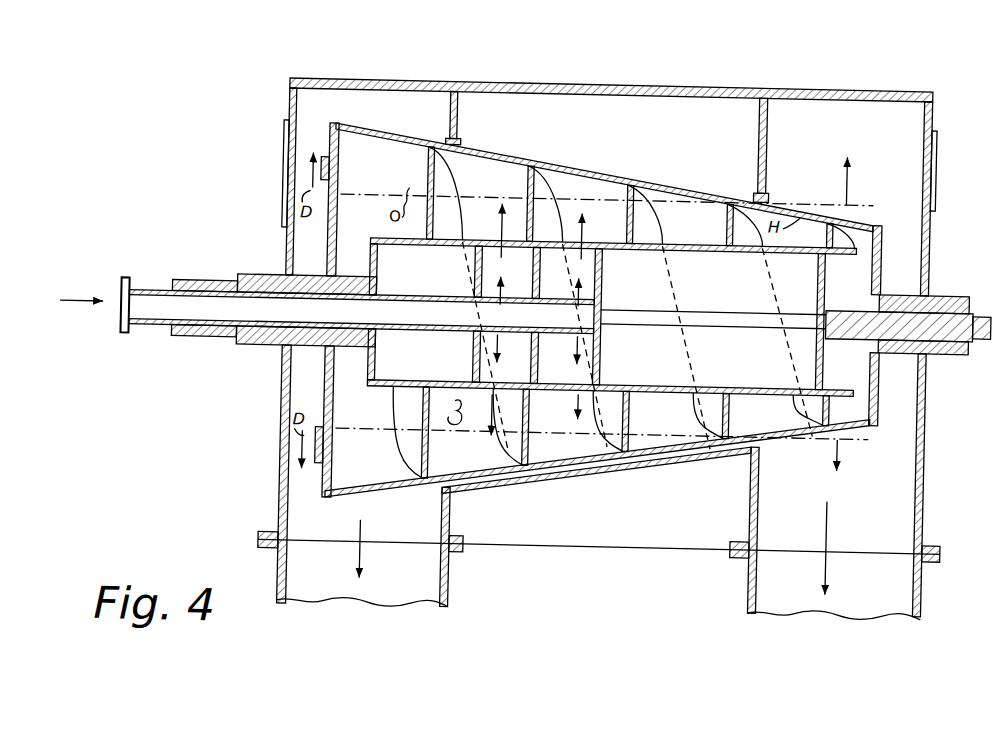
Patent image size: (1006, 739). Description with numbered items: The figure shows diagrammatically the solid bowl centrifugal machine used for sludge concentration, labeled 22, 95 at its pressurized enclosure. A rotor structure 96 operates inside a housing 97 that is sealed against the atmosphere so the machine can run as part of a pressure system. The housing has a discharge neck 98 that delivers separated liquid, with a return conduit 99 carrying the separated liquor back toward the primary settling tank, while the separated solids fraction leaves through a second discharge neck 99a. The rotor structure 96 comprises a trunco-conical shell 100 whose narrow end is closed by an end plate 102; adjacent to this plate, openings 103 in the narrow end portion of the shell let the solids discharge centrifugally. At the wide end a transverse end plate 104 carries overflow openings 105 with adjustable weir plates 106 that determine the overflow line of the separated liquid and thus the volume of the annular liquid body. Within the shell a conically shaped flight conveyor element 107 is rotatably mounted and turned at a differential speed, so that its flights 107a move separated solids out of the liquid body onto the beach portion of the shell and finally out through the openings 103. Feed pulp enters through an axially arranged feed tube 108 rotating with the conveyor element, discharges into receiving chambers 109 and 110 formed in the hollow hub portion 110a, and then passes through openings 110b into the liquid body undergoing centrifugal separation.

The centrifuge housing 22 is at (610, 168).
The housing 95 is at (742, 77).
The housing 97 is at (546, 78).
The rotor structure 96 is at (686, 177).
The shell 100 is at (568, 160).
The discharge neck 98 is at (288, 504).
The return conduit 99 is at (288, 567).
The discharge neck 99a is at (932, 488).
The end plate 102 is at (886, 247).
The openings 103 is at (862, 209).
The transverse end plate 104 is at (337, 373).
The overflow openings 105 is at (341, 217).
The adjustable weir plates 106 is at (329, 155).
The conically shaped flight conveyor element 107 is at (539, 231).
The flights 107a is at (457, 223).
The feed tube 108 is at (151, 292).
The receiving chamber 109 is at (509, 268).
The receiving chamber 110 is at (560, 269).
The hollow hub portion 110a is at (701, 244).
The openings 110b is at (560, 396).